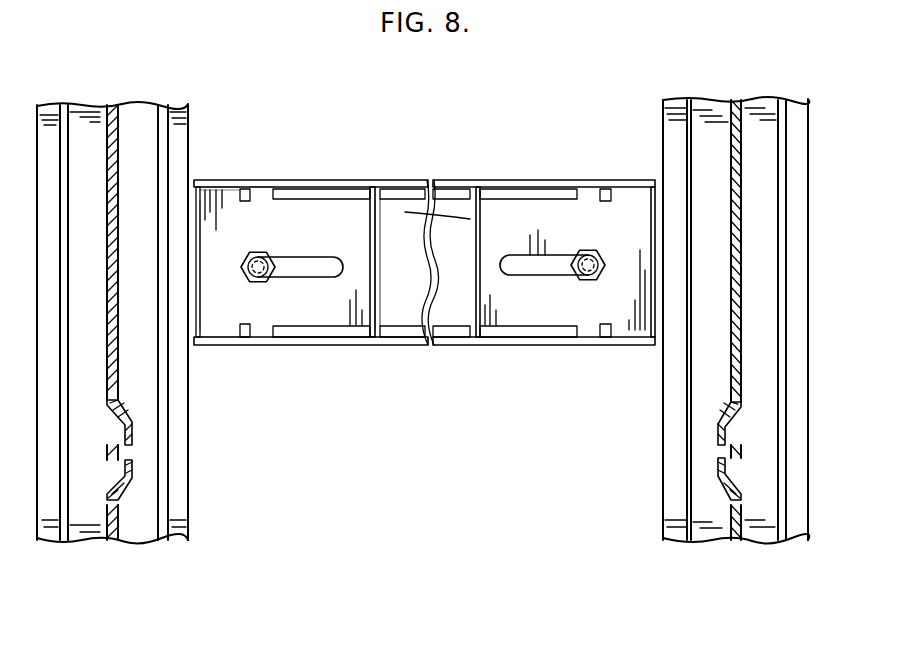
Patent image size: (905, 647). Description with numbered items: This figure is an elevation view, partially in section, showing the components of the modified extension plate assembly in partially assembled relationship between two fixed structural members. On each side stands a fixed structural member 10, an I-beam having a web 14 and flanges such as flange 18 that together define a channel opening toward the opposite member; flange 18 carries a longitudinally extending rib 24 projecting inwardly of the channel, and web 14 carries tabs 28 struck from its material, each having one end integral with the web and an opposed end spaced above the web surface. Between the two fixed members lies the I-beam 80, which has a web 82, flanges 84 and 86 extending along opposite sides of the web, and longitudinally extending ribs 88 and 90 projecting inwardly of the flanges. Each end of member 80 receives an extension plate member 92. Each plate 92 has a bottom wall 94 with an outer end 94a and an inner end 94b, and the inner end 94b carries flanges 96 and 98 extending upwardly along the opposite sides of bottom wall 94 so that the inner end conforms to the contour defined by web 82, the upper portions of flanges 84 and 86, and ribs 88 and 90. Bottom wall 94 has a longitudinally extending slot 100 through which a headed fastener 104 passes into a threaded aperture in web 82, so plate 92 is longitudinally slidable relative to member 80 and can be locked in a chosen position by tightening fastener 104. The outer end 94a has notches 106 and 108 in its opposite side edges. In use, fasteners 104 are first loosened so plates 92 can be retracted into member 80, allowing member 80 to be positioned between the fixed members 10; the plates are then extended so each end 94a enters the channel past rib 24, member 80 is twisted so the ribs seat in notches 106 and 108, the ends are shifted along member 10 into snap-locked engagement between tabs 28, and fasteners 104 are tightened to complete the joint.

The first structural member 10 is at (54, 101).
The web 14 is at (118, 128).
The flange 18 is at (145, 128).
The rib 24 is at (165, 122).
The tab 28 is at (137, 425).
The I-beam 80 is at (304, 180).
The web 82 is at (405, 195).
The flange 84 is at (393, 190).
The flange 86 is at (420, 350).
The rib 88 is at (470, 219).
The rib 90 is at (398, 335).
The extension plate member 92 is at (256, 240).
The bottom wall 94 is at (283, 305).
The outer end 94a is at (215, 292).
The inner end 94b is at (342, 240).
The flange 96 is at (322, 187).
The flange 98 is at (340, 337).
The slot 100 is at (328, 260).
The headed fastener 104 is at (250, 280).
The notch 106 is at (243, 190).
The notch 108 is at (250, 337).